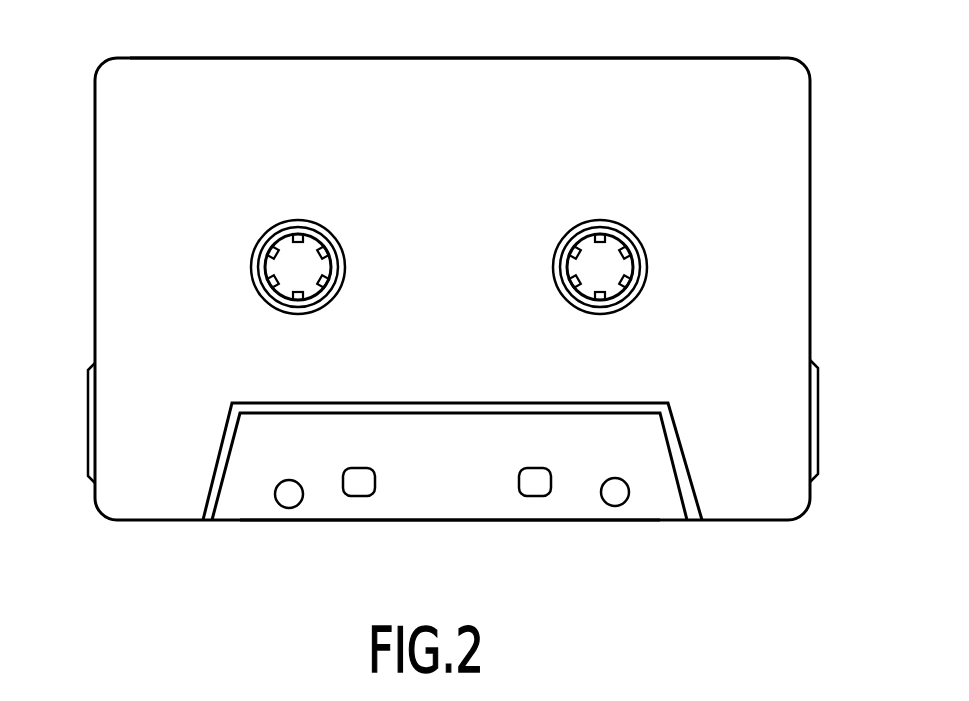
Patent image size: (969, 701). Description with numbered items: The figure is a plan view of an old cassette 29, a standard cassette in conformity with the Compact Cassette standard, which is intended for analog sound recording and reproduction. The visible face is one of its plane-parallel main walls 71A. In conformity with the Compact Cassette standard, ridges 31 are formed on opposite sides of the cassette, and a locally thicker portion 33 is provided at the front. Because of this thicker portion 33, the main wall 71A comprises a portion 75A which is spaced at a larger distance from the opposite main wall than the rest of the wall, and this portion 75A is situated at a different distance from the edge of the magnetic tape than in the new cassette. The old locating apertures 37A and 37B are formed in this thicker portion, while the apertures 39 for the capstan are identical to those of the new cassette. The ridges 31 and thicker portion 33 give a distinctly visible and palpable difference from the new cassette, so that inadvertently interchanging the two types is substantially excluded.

The old cassette 29 is at (788, 178).
The main wall 71A is at (535, 78).
The ridges 31 is at (88, 420).
The locally thicker portion 33 is at (470, 413).
The portion of main wall 75A is at (456, 495).
The apertures for the capstan 39 is at (290, 501).
The old locating aperture 37A is at (364, 484).
The old locating aperture 37B is at (537, 484).